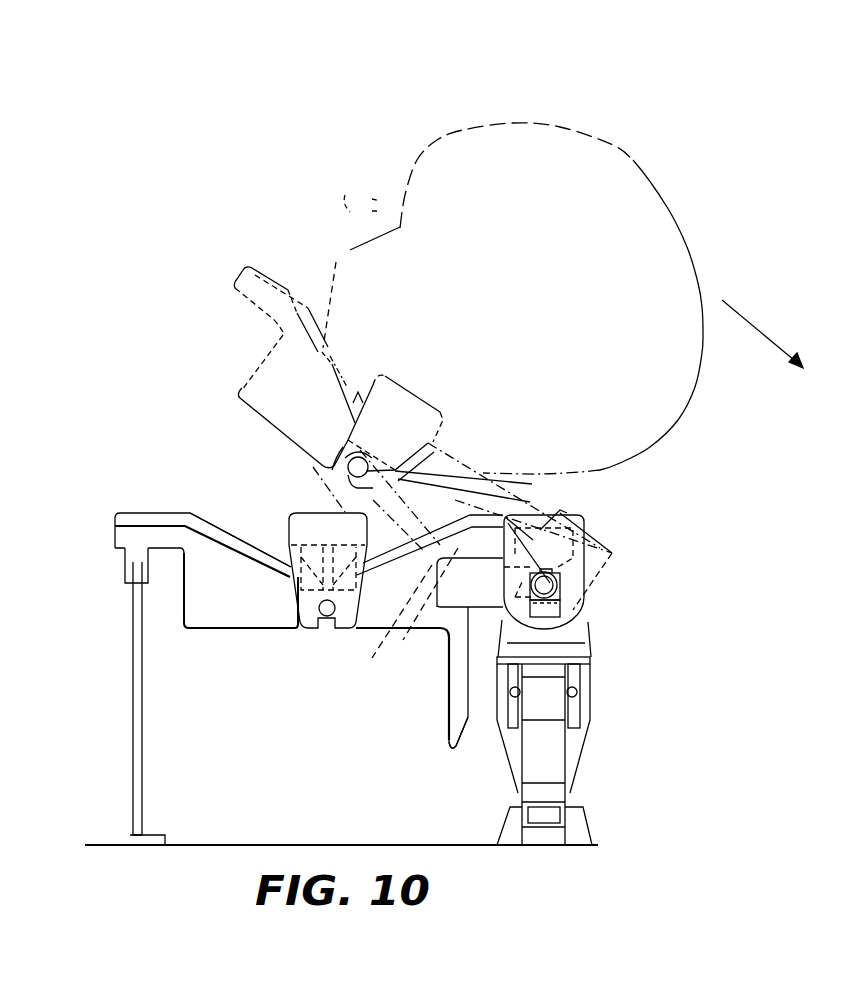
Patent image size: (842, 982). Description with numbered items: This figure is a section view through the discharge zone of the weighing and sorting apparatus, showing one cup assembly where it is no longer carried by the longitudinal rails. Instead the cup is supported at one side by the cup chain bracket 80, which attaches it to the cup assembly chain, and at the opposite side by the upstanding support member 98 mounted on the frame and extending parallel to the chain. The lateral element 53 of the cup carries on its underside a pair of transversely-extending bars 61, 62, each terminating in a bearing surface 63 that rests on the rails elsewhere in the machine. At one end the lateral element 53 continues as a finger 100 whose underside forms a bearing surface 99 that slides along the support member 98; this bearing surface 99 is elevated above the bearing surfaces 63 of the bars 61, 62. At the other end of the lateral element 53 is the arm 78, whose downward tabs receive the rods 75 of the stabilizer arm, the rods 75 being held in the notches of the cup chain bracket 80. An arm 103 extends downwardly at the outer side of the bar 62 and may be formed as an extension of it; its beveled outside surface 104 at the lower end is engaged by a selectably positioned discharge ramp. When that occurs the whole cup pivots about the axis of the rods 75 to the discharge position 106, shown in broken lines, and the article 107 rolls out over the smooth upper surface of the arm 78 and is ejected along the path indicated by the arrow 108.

The lateral element 53 is at (233, 533).
The transversely-extending bar 61 is at (272, 622).
The transversely-extending bar 62 is at (370, 620).
The bearing surface 63 is at (200, 630).
The rod 75 is at (568, 604).
The arm 78 is at (528, 513).
The cup chain bracket 80 is at (590, 638).
The upstanding support member 98 is at (123, 557).
The bearing surface 99 is at (167, 550).
The finger 100 is at (148, 513).
The arm 103 is at (447, 670).
The outside surface 104 is at (466, 718).
The discharge position 106 is at (315, 284).
The article 107 is at (513, 127).
The arrow 108 is at (780, 328).